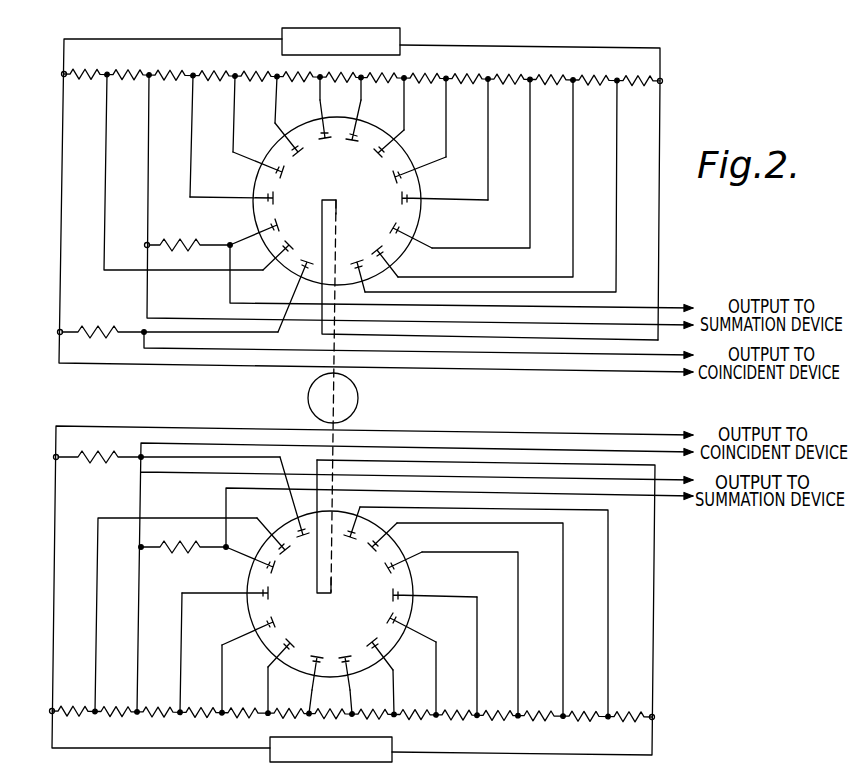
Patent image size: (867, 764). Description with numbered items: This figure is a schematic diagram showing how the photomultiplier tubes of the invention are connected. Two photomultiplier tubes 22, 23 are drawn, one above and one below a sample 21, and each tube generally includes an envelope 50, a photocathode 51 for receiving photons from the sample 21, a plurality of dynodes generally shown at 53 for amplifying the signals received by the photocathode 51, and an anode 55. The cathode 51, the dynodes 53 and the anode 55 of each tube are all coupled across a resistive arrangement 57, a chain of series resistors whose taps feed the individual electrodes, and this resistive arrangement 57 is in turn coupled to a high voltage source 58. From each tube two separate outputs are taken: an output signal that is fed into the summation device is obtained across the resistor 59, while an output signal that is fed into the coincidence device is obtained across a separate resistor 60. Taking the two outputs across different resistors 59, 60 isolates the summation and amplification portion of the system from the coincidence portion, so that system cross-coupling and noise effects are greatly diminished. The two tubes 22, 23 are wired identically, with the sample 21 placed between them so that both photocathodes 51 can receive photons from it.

The sample 21 is at (360, 386).
The photomultiplier tube 22 is at (662, 223).
The photomultiplier tube 23 is at (660, 680).
The envelope 50 is at (422, 218).
The photocathode 51 is at (338, 207).
The dynodes 53 is at (292, 172).
The anode 55 is at (306, 256).
The resistive arrangement 57 is at (438, 69).
The high voltage source 58 is at (281, 49).
The resistor 59 is at (192, 563).
The resistor 60 is at (96, 329).